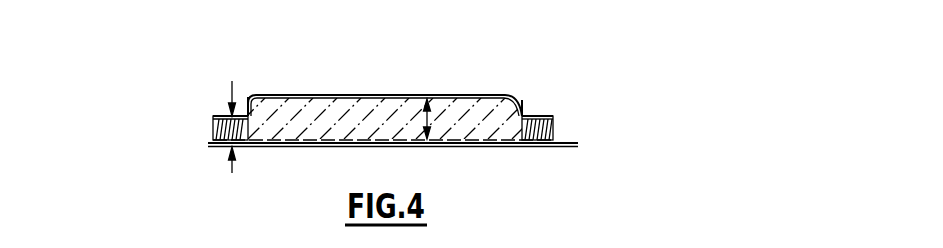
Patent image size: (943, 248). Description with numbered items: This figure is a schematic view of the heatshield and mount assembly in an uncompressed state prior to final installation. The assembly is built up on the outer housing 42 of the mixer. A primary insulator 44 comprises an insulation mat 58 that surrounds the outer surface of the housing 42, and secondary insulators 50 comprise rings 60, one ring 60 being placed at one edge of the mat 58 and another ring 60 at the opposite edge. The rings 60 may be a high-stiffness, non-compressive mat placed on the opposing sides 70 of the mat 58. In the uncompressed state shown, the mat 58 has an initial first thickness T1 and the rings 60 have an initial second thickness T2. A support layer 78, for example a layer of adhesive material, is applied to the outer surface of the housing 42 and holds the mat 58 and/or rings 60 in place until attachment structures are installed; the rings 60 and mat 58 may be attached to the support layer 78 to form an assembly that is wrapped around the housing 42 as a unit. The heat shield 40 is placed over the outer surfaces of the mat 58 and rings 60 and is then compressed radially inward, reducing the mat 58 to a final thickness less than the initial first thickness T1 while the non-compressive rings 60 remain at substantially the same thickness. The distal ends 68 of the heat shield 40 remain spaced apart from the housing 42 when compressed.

The heat shield 40 is at (450, 95).
The outer housing 42 is at (458, 147).
The primary insulator 44 is at (516, 88).
The secondary insulators 50 is at (194, 178).
The insulation mat 58 is at (318, 100).
The rings 60 is at (213, 128).
The distal ends 68 is at (220, 113).
The opposing sides 70 is at (247, 113).
The support layer 78 is at (206, 145).
The initial first thickness T1 is at (425, 100).
The initial second thickness T2 is at (228, 94).